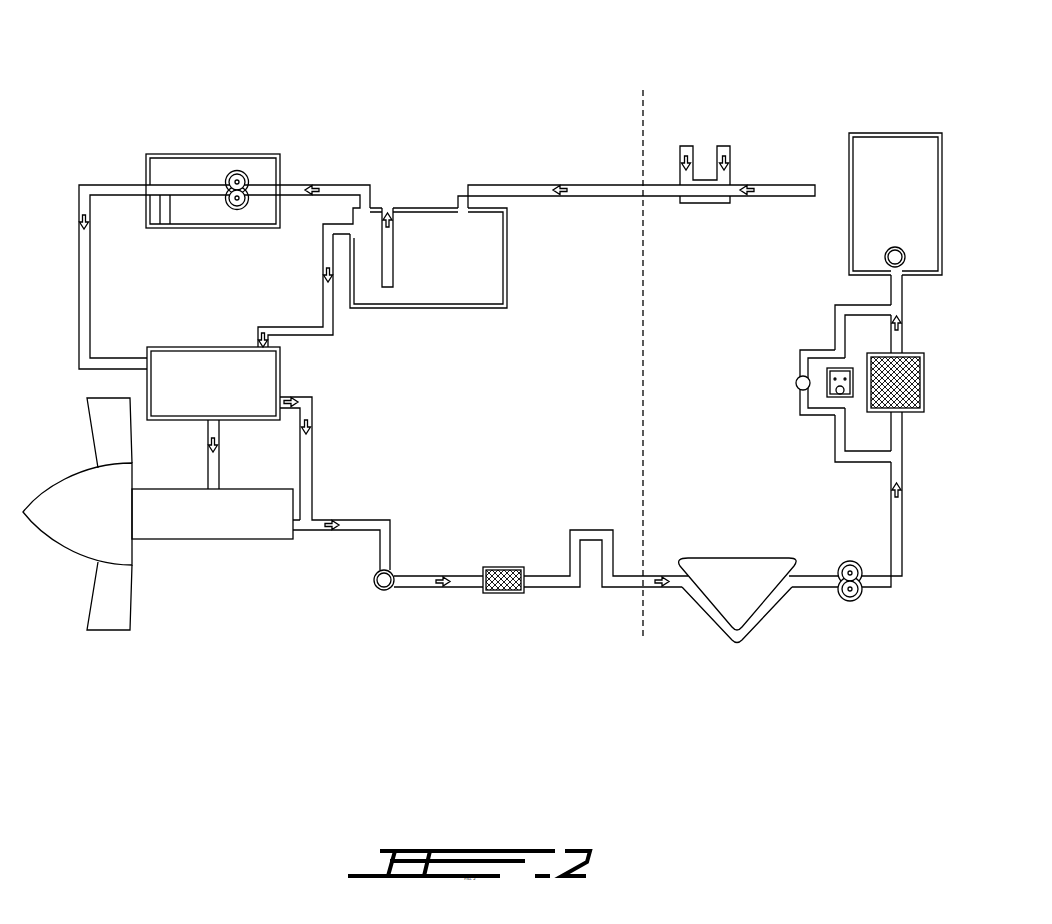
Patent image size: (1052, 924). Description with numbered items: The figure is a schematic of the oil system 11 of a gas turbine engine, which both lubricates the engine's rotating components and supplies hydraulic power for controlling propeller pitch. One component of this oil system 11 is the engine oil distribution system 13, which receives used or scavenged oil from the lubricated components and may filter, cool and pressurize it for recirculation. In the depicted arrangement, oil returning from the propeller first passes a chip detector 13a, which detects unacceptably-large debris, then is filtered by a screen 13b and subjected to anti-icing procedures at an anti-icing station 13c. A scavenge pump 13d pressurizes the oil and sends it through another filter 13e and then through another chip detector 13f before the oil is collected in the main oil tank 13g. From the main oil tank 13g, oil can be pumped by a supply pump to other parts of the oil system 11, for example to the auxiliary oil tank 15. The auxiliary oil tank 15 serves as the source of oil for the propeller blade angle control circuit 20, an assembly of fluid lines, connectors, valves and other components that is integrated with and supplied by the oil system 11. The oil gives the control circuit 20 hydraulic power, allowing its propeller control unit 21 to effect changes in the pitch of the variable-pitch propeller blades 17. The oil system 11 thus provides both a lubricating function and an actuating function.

The oil system 11 is at (380, 130).
The engine oil distribution system 13 is at (610, 658).
The chip detector 13a is at (392, 572).
The screen 13b is at (503, 565).
The anti-icing station 13c is at (736, 585).
The scavenge pump 13d is at (865, 597).
The filter 13e is at (855, 410).
The chip detector 13f is at (872, 257).
The main oil tank 13g is at (896, 133).
The auxiliary oil tank 15 is at (507, 268).
The propeller blades 17 is at (100, 421).
The propeller blade angle control circuit 20 is at (124, 228).
The propeller control unit 21 is at (282, 372).